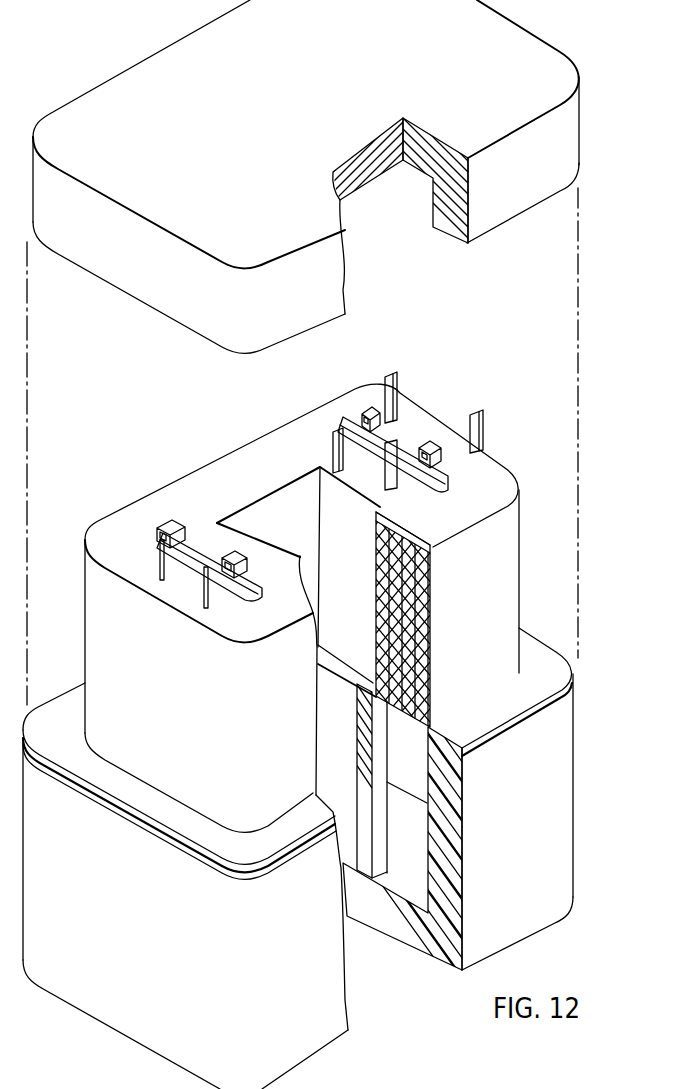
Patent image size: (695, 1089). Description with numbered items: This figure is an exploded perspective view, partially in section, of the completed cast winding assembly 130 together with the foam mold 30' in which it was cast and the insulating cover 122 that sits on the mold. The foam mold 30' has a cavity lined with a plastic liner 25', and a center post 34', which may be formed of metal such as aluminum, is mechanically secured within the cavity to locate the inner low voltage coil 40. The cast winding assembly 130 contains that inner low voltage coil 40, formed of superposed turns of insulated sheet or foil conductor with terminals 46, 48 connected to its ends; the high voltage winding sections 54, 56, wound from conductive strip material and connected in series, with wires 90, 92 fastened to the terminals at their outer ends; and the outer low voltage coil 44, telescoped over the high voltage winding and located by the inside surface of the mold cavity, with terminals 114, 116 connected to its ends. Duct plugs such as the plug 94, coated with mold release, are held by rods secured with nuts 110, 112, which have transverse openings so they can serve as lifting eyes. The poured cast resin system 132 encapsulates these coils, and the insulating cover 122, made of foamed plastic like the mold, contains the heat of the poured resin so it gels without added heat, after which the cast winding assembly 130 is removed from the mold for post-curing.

The insulating cover 122 is at (583, 146).
The cast winding assembly 130 is at (567, 560).
The plastic liner 25' is at (327, 753).
The foam mold 30' is at (325, 881).
The center post 34' is at (465, 835).
The outer low voltage coil 44 is at (410, 617).
The high voltage winding section 54 is at (418, 582).
The high voltage winding section 56 is at (400, 671).
The inner low voltage coil 40 is at (390, 517).
The cast resin system 132 is at (413, 543).
The terminal 46 is at (333, 455).
The terminal 48 is at (393, 488).
The terminal 114 is at (388, 376).
The terminal 116 is at (483, 418).
The duct plug 94 is at (206, 558).
The nut 110 is at (178, 522).
The nut 112 is at (242, 572).
The wire 90 is at (204, 590).
The wire 92 is at (160, 565).